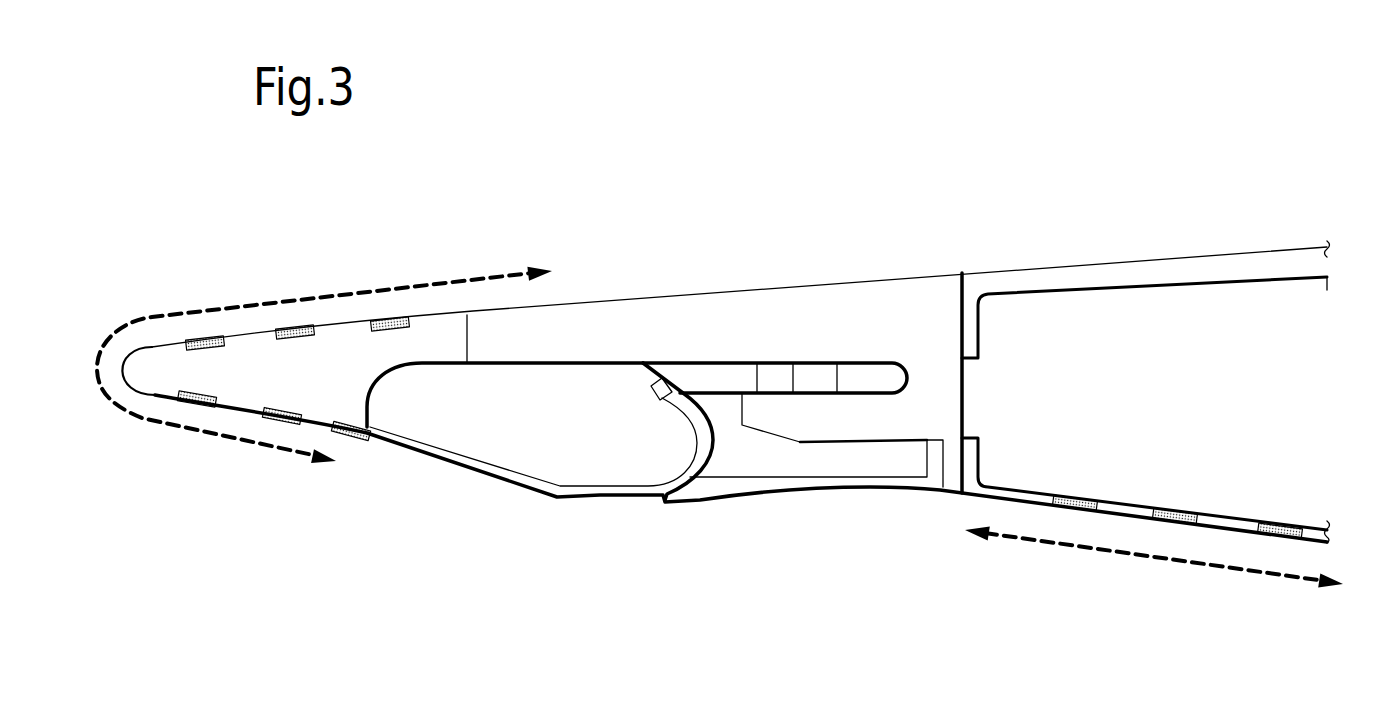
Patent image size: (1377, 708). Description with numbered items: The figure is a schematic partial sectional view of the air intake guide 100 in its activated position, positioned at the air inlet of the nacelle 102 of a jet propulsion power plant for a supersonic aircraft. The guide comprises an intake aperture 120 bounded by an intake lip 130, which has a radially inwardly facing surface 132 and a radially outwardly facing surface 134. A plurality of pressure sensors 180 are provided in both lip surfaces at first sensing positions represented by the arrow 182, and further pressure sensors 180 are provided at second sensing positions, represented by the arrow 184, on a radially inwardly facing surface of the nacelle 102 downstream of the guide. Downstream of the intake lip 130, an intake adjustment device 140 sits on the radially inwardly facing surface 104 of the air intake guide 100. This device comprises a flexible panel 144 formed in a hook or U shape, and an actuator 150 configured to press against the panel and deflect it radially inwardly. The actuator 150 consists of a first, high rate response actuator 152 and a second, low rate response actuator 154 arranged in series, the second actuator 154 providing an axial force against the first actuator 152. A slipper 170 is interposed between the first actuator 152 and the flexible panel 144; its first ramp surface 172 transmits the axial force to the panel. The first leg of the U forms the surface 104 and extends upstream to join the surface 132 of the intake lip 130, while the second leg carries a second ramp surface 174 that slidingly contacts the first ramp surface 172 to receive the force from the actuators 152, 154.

The air intake guide 100 is at (150, 198).
The nacelle 102 is at (1053, 263).
The radially inwardly facing surface 104 is at (381, 443).
The intake aperture 120 is at (585, 638).
The intake lip 130 is at (121, 363).
The radially inwardly facing surface 132 is at (152, 397).
The radially outwardly facing surface 134 is at (165, 345).
The intake adjustment device 140 is at (590, 444).
The flexible panel 144 is at (548, 498).
The actuator 150 is at (815, 308).
The first, high rate response actuator 152 is at (780, 372).
The second, low rate response actuator 154 is at (825, 375).
The slipper 170 is at (717, 376).
The first ramp surface 172 is at (653, 366).
The second ramp surface 174 is at (656, 400).
The pressure sensors 180 is at (380, 319).
The arrow 182 is at (428, 282).
The arrow 184 is at (1282, 578).